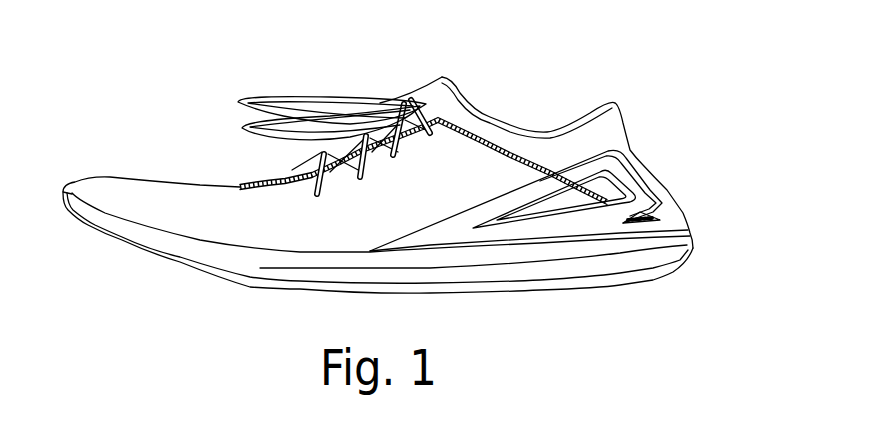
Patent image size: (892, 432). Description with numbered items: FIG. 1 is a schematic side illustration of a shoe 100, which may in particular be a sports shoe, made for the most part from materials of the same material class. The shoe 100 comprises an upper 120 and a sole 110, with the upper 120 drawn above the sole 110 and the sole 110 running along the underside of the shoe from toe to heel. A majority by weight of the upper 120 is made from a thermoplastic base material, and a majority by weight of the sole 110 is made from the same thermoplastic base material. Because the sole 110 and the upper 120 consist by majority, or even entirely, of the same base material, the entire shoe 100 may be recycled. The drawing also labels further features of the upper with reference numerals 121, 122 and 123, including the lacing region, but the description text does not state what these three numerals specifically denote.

The shoe 100 is at (103, 151).
The sole 110 is at (715, 230).
The upper 120 is at (658, 121).
The lace 121 is at (253, 100).
The lacing region / eyestay 122 is at (273, 185).
The collar / quarter panel 123 is at (560, 153).